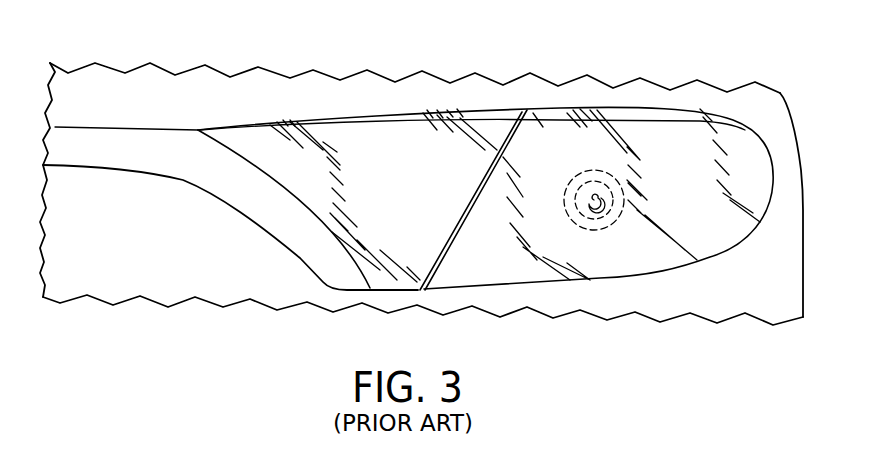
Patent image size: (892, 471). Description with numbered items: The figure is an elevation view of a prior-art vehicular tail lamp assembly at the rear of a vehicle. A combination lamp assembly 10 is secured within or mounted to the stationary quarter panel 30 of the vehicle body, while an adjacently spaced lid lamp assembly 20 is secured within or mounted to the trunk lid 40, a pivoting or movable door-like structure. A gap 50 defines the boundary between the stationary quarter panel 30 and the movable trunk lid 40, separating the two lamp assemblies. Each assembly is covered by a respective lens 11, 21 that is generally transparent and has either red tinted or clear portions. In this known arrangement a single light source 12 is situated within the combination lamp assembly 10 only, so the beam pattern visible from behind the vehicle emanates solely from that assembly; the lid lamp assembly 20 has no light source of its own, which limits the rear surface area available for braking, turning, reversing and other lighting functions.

The combination lamp assembly 10 is at (625, 255).
The lens 11 is at (688, 175).
The light source 12 is at (567, 218).
The lid lamp assembly 20 is at (315, 208).
The lens 21 is at (418, 183).
The quarter panel 30 is at (787, 230).
The trunk lid 40 is at (152, 85).
The gap 50 is at (528, 108).